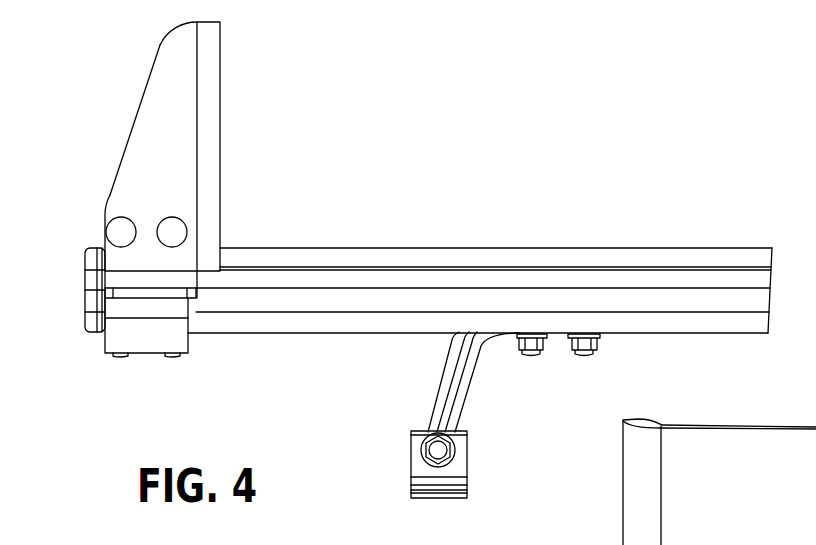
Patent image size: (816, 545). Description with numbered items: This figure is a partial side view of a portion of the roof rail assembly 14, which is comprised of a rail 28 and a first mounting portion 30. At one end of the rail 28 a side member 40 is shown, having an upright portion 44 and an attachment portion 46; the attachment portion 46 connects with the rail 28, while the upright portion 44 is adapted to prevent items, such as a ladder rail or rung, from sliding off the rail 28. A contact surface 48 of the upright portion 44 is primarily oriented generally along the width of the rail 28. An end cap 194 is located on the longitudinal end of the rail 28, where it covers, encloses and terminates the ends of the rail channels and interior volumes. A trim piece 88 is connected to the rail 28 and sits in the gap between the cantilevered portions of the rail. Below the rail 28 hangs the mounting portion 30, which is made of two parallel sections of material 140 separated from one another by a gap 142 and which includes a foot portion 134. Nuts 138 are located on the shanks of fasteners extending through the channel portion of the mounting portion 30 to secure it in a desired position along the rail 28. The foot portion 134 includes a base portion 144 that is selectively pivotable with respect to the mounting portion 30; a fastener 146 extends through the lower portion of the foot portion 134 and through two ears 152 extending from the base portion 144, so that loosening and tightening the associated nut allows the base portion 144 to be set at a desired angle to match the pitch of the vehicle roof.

The first roof rail assembly 14 is at (438, 256).
The rail 28 is at (745, 278).
The first mounting portion 30 is at (436, 382).
The side member 40 is at (178, 160).
The upright portion 44 is at (140, 137).
The attachment portion 46 is at (110, 341).
The contact surface 48 is at (220, 95).
The trim piece 88 is at (333, 257).
The foot portion 134 is at (428, 408).
The nuts 138 is at (572, 344).
The parallel sections of material 140 is at (467, 365).
The gap 142 is at (453, 382).
The base portion 144 is at (431, 464).
The fastener 146 is at (447, 448).
The ears 152 is at (417, 440).
The end cap 194 is at (85, 296).